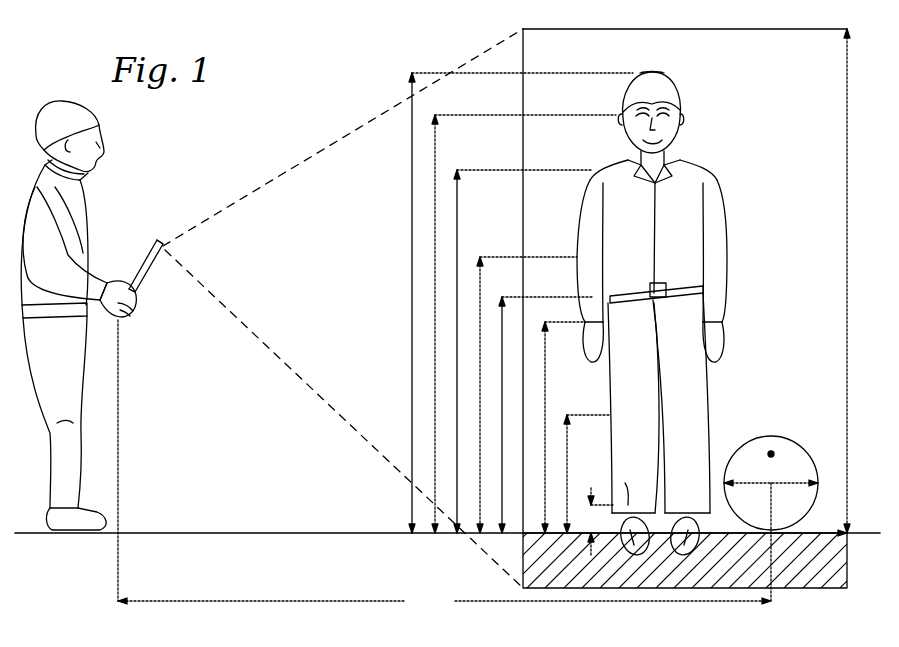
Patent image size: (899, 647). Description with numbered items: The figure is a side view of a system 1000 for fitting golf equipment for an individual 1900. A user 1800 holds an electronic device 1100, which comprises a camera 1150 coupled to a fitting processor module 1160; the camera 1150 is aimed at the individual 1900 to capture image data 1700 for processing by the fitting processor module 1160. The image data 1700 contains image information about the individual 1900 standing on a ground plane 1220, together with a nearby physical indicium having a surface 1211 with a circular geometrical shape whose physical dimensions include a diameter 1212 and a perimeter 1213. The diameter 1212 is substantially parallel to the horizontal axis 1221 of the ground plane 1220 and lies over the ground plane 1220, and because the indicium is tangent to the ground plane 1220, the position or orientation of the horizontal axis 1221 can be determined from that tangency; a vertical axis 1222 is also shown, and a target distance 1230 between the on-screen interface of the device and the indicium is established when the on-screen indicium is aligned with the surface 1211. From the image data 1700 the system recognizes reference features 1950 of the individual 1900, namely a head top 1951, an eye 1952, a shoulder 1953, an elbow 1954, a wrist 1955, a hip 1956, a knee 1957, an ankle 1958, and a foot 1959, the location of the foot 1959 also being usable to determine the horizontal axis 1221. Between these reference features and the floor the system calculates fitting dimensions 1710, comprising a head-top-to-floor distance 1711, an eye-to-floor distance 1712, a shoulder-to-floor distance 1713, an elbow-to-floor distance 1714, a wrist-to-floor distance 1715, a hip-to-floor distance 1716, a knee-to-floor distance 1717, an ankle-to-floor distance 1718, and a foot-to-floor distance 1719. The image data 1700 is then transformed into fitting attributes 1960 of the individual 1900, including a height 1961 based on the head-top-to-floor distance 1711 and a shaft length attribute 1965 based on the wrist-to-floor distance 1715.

The system 1000 is at (226, 111).
The electronic device 1100 is at (147, 254).
The camera 1150 is at (162, 244).
The fitting processor module 1160 is at (140, 277).
The image data 1700 is at (260, 187).
The fitting dimensions 1710 is at (397, 157).
The head-top-to-floor distance 1711 is at (515, 303).
The eye-to-floor distance 1712 is at (518, 324).
The shoulder-to-floor distance 1713 is at (518, 351).
The elbow-to-floor distance 1714 is at (521, 395).
The wrist-to-floor distance 1715 is at (546, 415).
The hip-to-floor distance 1716 is at (537, 427).
The knee-to-floor distance 1717 is at (581, 474).
The ankle-to-floor distance 1718 is at (595, 522).
The foot-to-floor distance 1719 is at (610, 540).
The user 1800 is at (85, 216).
The individual 1900 is at (664, 315).
The reference features 1950 is at (666, 97).
The head top 1951 is at (640, 73).
The eye 1952 is at (669, 118).
The shoulder 1953 is at (593, 172).
The elbow 1954 is at (576, 260).
The wrist 1955 is at (568, 328).
The hip 1956 is at (627, 303).
The knee 1957 is at (610, 416).
The ankle 1958 is at (617, 506).
The foot 1959 is at (704, 528).
The fitting attributes 1960 is at (398, 492).
The height 1961 is at (411, 418).
The shaft length attribute 1965 is at (545, 397).
The surface 1211 is at (769, 452).
The diameter 1212 is at (788, 482).
The perimeter 1213 is at (739, 455).
The ground plane 1220 is at (795, 572).
The horizontal axis 1221 is at (836, 533).
The vertical axis 1222 is at (688, 281).
The target distance 1230 is at (444, 464).